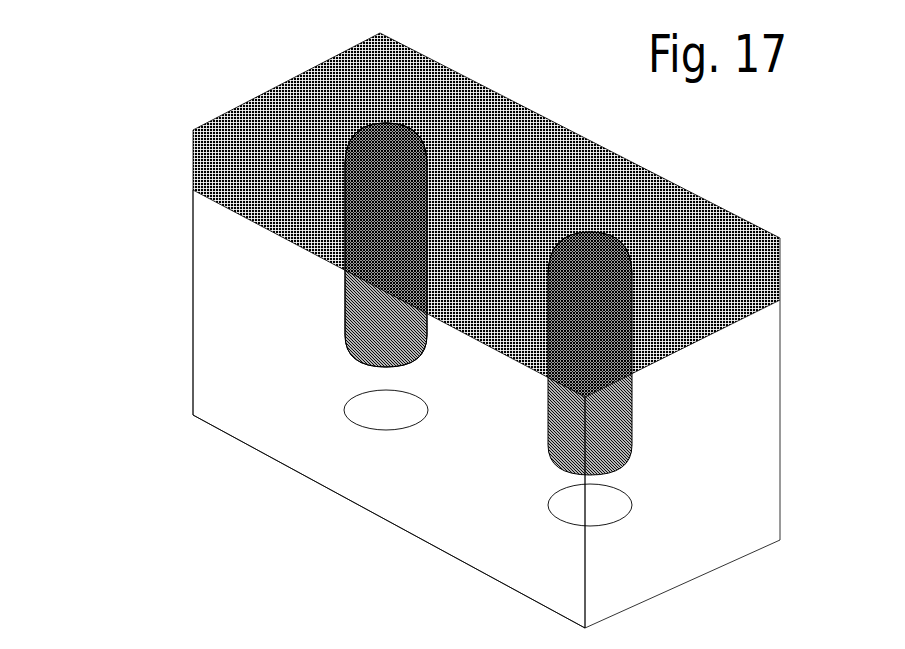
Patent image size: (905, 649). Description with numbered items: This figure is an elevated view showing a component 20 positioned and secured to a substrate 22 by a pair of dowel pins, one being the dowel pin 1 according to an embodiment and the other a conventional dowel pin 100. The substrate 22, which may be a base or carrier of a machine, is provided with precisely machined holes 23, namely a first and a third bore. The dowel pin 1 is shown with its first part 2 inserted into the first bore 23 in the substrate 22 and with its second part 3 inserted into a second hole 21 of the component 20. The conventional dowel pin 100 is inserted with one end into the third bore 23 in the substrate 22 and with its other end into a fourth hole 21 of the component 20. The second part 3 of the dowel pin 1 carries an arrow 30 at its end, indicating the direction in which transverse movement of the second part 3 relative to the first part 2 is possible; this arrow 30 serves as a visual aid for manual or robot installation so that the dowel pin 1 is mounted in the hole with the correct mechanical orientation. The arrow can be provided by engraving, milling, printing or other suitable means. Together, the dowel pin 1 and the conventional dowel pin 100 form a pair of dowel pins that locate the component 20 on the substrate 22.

The dowel pin 1 is at (318, 232).
The first part 2 is at (360, 293).
The second part 3 is at (347, 170).
The component 20 is at (540, 138).
The hole of the component 21 is at (390, 118).
The substrate 22 is at (213, 257).
The hole in the substrate 23 is at (357, 392).
The arrow 30 is at (377, 122).
The conventional dowel pin 100 is at (572, 420).